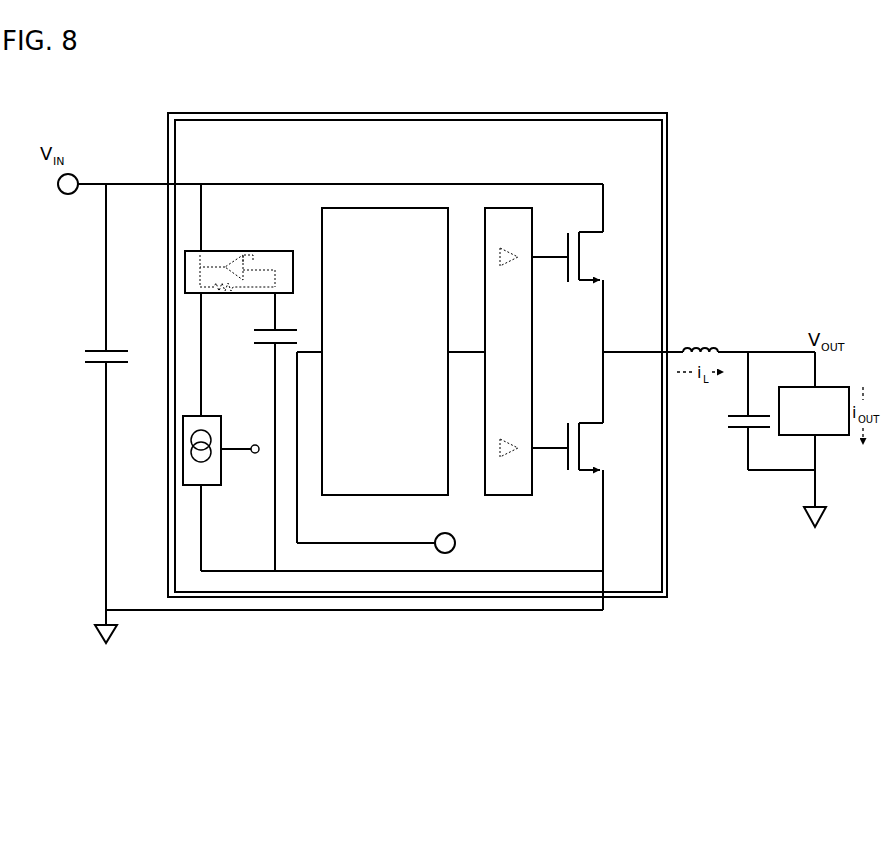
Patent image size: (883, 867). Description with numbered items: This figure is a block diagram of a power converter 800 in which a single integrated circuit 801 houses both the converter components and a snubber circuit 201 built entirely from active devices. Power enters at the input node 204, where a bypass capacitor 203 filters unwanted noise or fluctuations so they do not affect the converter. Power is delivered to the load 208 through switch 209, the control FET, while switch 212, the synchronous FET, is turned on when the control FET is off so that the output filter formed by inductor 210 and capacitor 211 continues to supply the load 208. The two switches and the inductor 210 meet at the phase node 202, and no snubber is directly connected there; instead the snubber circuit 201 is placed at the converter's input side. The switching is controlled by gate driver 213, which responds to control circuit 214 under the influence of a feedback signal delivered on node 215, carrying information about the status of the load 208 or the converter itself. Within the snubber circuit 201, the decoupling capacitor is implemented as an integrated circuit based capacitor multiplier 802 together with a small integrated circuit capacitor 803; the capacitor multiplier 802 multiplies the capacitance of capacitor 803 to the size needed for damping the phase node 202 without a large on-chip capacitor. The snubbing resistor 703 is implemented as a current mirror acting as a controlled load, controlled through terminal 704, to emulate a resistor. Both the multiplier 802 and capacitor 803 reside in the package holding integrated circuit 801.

The power converter 800 is at (57, 100).
The integrated circuit 801 is at (650, 149).
The snubber circuit 201 is at (201, 181).
The input node 204 is at (79, 178).
The bypass capacitor 203 is at (90, 367).
The capacitor multiplier 802 is at (268, 243).
The small integrated circuit capacitor 803 is at (256, 332).
The snubbing resistor 703 is at (217, 410).
The terminal 704 is at (255, 458).
The control circuit 214 is at (404, 361).
The gate driver 213 is at (528, 361).
The switch 209 is at (566, 228).
The switch 212 is at (575, 482).
The phase node 202 is at (598, 362).
The node 215 is at (458, 533).
The inductor 210 is at (721, 344).
The capacitor 211 is at (724, 440).
The load 208 is at (832, 420).